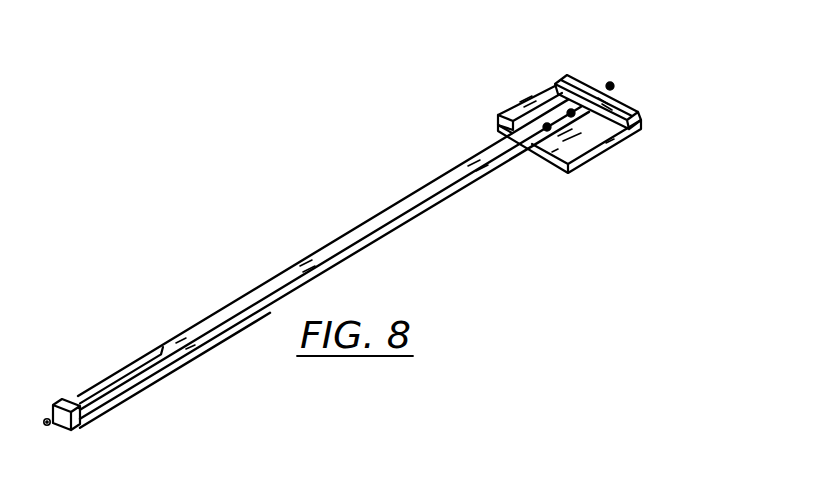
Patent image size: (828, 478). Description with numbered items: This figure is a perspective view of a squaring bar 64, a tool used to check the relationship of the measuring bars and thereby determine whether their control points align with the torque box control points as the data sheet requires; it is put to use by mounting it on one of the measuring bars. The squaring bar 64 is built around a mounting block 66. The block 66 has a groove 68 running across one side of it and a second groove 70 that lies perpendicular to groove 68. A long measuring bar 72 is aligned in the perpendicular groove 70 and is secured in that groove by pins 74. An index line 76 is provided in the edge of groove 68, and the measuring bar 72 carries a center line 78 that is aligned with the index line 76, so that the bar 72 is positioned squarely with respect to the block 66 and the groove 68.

The squaring bar 64 is at (379, 250).
The mounting block 66 is at (600, 152).
The groove 68 is at (629, 130).
The groove 70 is at (538, 106).
The measuring bar 72 is at (447, 198).
The pins 74 is at (553, 100).
The index line 76 is at (614, 86).
The center line 78 is at (117, 372).